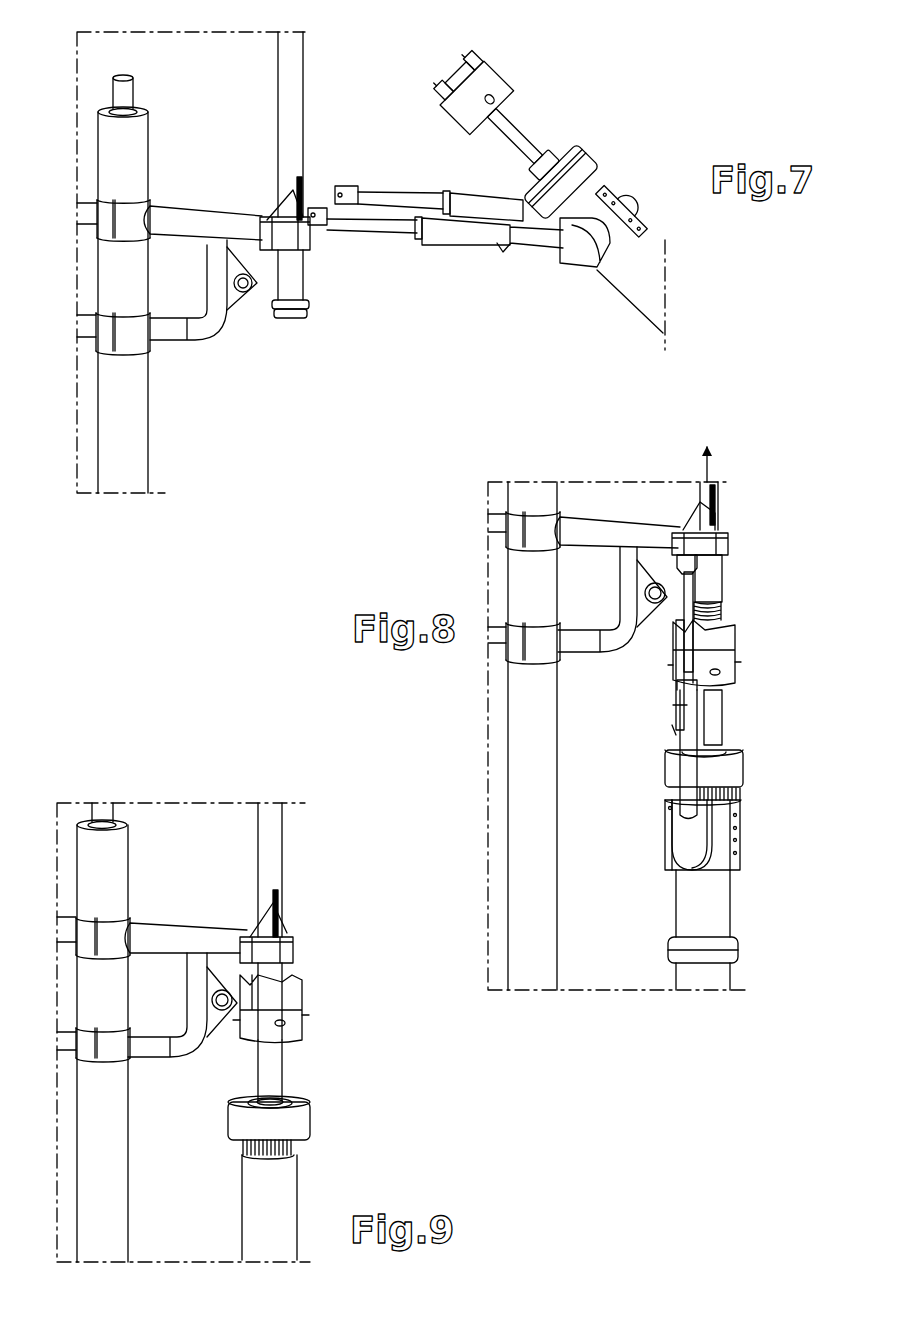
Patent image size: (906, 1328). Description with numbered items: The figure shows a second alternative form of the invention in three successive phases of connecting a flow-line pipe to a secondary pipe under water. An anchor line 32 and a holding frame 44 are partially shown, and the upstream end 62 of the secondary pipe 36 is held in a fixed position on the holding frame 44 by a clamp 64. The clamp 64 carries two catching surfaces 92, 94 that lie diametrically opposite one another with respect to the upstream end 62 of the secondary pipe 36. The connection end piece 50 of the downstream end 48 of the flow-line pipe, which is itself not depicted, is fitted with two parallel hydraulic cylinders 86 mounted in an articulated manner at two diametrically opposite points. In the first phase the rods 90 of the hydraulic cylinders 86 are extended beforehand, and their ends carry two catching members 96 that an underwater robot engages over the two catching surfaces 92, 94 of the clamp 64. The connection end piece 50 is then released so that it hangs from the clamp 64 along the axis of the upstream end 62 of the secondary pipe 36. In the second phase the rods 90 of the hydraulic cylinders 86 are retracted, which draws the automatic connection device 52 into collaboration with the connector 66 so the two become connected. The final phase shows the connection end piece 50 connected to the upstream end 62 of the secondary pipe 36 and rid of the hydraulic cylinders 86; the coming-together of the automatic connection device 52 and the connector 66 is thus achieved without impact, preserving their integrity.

In FIG. 7, the anchor line 32 is at (130, 420).
In FIG. 8, the anchor line 32 is at (540, 865).
In FIG. 9, the anchor line 32 is at (112, 1210).
In FIG. 7, the secondary pipe 36 is at (300, 52).
In FIG. 8, the secondary pipe 36 is at (707, 462).
In FIG. 9, the secondary pipe 36 is at (270, 828).
In FIG. 7, the holding frame 44 is at (172, 217).
In FIG. 7, the downstream end of the flow-line pipe 48 is at (700, 331).
In FIG. 7, the connection end piece 50 is at (633, 158).
In FIG. 9, the connection end piece 50 is at (338, 1118).
In FIG. 7, the automatic connection device 52 is at (493, 67).
In FIG. 8, the automatic connection device 52 is at (732, 672).
In FIG. 9, the automatic connection device 52 is at (298, 1025).
In FIG. 7, the upstream end of the secondary pipe 62 is at (293, 287).
In FIG. 8, the upstream end of the secondary pipe 62 is at (703, 574).
In FIG. 7, the clamp 64 is at (280, 202).
In FIG. 8, the clamp 64 is at (693, 515).
In FIG. 9, the clamp 64 is at (260, 922).
In FIG. 7, the connector 66 is at (280, 317).
In FIG. 8, the connector 66 is at (720, 605).
In FIG. 7, the hydraulic cylinders 86 is at (472, 203).
In FIG. 8, the hydraulic cylinders 86 is at (720, 723).
In FIG. 7, the rods of the hydraulic cylinders 90 is at (396, 195).
In FIG. 8, the rods of the hydraulic cylinders 90 is at (720, 560).
In FIG. 7, the catching surface 92 is at (227, 242).
In FIG. 7, the catching surface 94 is at (315, 190).
In FIG. 7, the catching members 96 is at (347, 185).